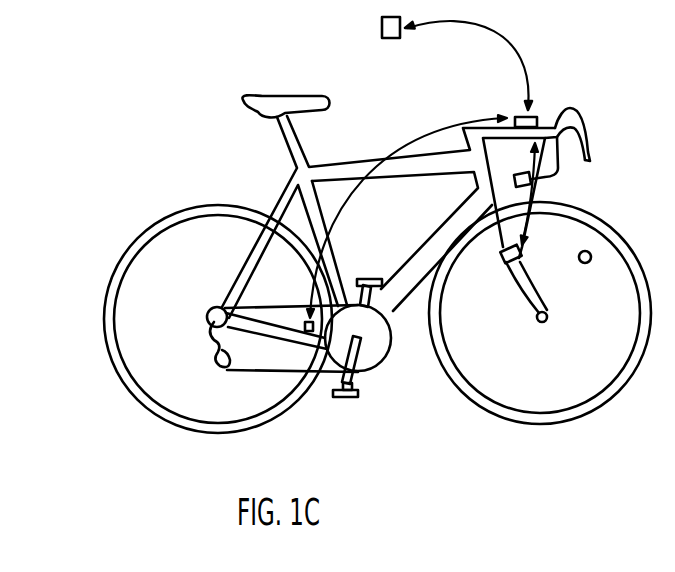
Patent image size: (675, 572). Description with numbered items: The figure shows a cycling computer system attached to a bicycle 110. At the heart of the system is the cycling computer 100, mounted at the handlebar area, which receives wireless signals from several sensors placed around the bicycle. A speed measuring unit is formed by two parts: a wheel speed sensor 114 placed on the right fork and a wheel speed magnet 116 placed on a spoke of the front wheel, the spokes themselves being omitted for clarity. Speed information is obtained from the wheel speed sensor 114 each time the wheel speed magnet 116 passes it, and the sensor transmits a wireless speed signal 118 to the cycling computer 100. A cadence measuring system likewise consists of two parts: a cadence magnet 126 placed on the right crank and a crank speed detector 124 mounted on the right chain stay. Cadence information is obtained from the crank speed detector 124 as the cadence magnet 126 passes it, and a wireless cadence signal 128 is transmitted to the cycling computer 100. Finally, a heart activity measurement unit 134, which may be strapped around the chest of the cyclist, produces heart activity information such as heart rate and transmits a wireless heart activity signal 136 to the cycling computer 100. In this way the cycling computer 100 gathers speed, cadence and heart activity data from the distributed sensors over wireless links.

The bicycle 110 is at (150, 135).
The cycling computer 100 is at (545, 110).
The heart activity measurement unit 134 is at (382, 28).
The wireless heart activity signal 136 is at (500, 28).
The wireless cadence signal 128 is at (399, 143).
The wireless speed signal 118 is at (533, 182).
The wheel speed sensor 114 is at (505, 254).
The wheel speed magnet 116 is at (585, 263).
The crank speed detector 124 is at (307, 335).
The cadence magnet 126 is at (330, 378).